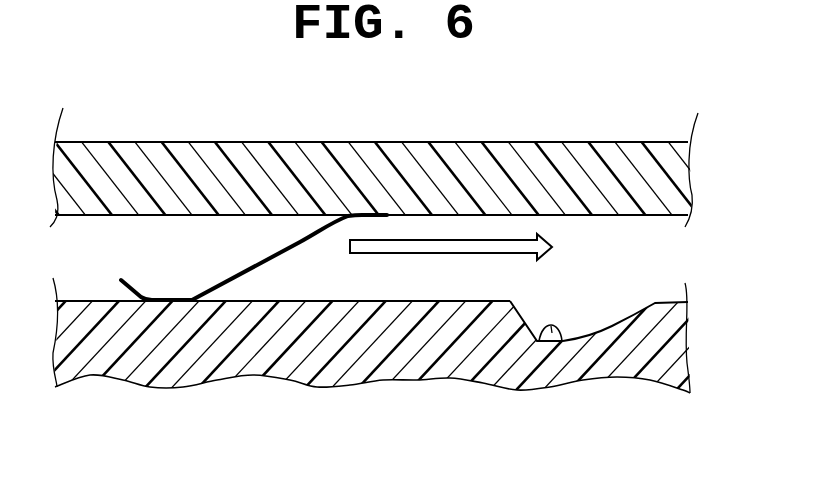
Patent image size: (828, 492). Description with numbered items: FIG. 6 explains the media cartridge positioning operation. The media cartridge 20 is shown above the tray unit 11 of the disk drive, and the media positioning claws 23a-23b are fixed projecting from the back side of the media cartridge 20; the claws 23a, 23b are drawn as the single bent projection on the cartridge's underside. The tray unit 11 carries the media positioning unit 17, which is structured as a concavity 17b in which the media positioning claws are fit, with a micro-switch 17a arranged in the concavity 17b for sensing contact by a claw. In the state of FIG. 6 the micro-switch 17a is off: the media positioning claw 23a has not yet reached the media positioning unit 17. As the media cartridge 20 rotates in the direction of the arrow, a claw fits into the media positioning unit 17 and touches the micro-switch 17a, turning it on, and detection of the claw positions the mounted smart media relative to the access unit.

The media cartridge 20 is at (427, 135).
The tray unit 11 is at (72, 300).
The media positioning unit 17 is at (538, 310).
The micro-switch 17a is at (554, 326).
The concavity 17b is at (621, 321).
The media positioning claw 23a is at (254, 257).
The media positioning claw 23b is at (247, 273).
The media positioning claws 23a-23b is at (254, 257).